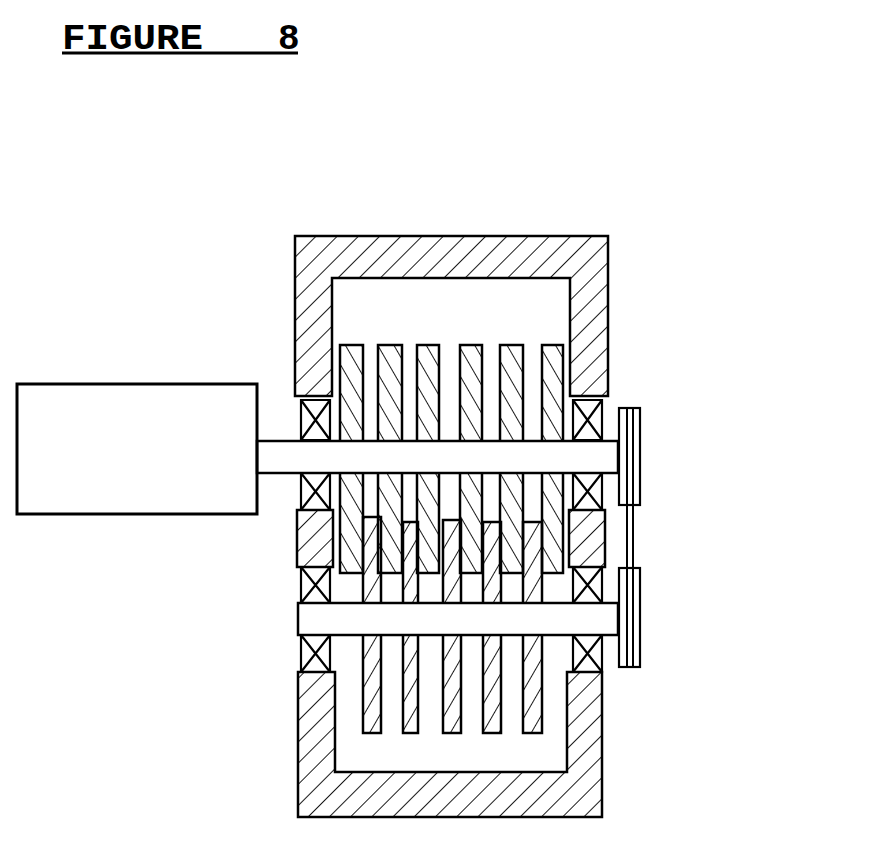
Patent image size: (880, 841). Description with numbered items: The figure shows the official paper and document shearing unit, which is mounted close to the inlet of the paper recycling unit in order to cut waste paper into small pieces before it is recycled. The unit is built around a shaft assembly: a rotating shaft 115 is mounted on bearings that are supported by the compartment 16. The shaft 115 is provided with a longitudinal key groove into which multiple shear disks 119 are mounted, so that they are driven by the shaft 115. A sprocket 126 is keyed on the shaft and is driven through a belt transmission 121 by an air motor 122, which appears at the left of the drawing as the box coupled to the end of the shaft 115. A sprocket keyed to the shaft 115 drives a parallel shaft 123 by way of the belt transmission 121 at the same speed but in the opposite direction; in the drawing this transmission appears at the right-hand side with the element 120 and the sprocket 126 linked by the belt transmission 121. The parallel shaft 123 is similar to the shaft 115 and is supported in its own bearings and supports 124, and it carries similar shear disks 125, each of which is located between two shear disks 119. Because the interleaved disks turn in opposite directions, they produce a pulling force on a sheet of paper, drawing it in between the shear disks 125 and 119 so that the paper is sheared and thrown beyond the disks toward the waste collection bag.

The compartment 16 is at (353, 235).
The rotating shaft 115 is at (282, 440).
The shear disks 119 is at (430, 353).
The pulley 120 is at (642, 470).
The belt transmission 121 is at (635, 540).
The air motor 122 is at (125, 415).
The parallel shaft 123 is at (298, 623).
The support block 124 is at (300, 497).
The shear disks 125 is at (367, 683).
The sprocket 126 is at (640, 661).